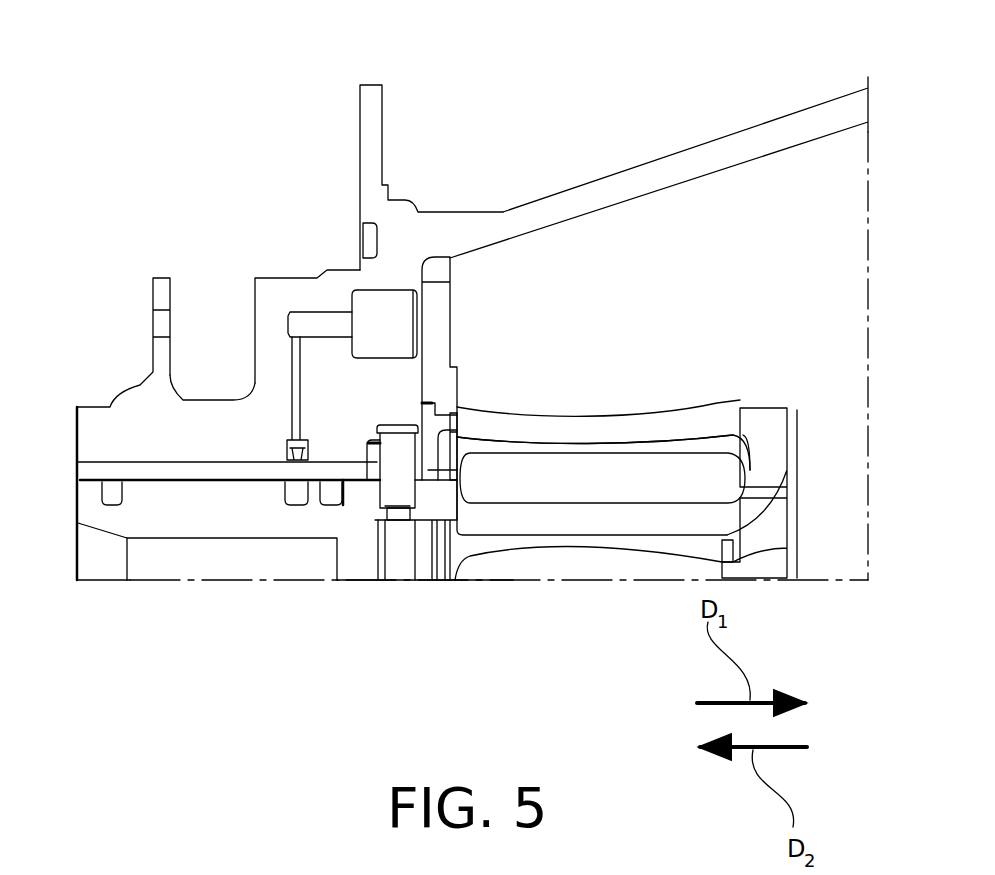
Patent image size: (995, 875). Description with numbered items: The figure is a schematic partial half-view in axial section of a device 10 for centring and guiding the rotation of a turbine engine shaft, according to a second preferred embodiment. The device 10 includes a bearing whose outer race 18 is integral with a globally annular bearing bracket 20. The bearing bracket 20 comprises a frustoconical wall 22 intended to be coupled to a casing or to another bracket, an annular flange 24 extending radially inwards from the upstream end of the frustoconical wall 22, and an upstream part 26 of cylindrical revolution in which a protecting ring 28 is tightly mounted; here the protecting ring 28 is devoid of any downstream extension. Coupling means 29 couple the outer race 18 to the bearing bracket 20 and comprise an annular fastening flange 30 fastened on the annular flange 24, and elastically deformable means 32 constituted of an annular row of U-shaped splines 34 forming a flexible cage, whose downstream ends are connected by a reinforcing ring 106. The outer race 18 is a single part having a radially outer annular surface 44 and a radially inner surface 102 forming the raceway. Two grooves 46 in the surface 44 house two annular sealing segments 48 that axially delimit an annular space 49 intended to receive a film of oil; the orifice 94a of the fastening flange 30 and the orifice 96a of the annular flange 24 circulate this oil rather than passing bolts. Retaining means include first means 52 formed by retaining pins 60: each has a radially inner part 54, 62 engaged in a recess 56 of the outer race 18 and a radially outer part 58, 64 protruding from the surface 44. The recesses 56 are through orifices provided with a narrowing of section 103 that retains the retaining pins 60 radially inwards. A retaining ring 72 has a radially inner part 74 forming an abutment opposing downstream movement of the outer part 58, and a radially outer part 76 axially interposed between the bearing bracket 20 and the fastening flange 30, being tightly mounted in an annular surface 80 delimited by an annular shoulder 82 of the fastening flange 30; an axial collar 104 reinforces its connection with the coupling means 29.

The device 10 is at (150, 116).
The outer race 18 is at (153, 523).
The bearing bracket 20 is at (210, 388).
The frustoconical wall 22 is at (796, 128).
The annular flange 24 is at (403, 402).
The upstream part 26 is at (264, 443).
The protecting ring 28 is at (113, 490).
The coupling means 29 is at (610, 142).
The annular fastening flange 30 is at (443, 270).
The elastically deformable means 32 is at (625, 404).
The splines 34 is at (707, 418).
The radially outer annular surface 44 is at (158, 473).
The grooves 46 is at (93, 494).
The annular sealing segments 48 is at (112, 478).
The annular space 49 is at (233, 487).
The first means 52 is at (274, 376).
The retaining pins 60 is at (375, 468).
The radially inner part 54 is at (412, 591).
The radially inner part 62 is at (415, 510).
The recess 56 is at (395, 487).
The radially outer part 58 is at (267, 361).
The radially outer part 64 is at (376, 456).
The retaining ring 72 is at (460, 433).
The radially inner part 74 is at (467, 470).
The radially outer part 76 is at (432, 418).
The annular surface 80 is at (420, 404).
The annular shoulder 82 is at (458, 420).
The orifice 94a is at (450, 295).
The orifice 96a is at (373, 303).
The radially inner surface 102 is at (185, 540).
The narrowing of section 103 is at (378, 520).
The axial collar 104 is at (460, 418).
The reinforcing ring 106 is at (783, 440).